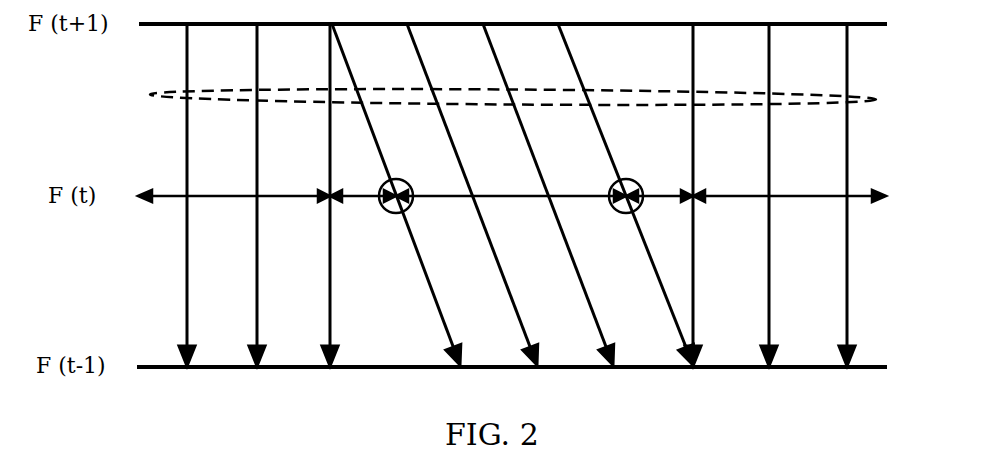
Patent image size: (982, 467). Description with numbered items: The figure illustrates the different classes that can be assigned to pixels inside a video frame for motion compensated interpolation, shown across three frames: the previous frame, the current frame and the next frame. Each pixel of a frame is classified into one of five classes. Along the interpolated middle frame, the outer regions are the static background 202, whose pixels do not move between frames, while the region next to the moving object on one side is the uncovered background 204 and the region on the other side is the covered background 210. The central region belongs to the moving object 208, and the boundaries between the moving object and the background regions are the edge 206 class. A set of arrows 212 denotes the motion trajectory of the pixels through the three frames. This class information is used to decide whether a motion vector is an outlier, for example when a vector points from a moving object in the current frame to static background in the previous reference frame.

The static background 202 is at (218, 198).
The uncovered background 204 is at (350, 198).
The edge 206 is at (396, 216).
The moving object 208 is at (518, 198).
The covered background 210 is at (661, 198).
The set of arrows 212 is at (157, 90).